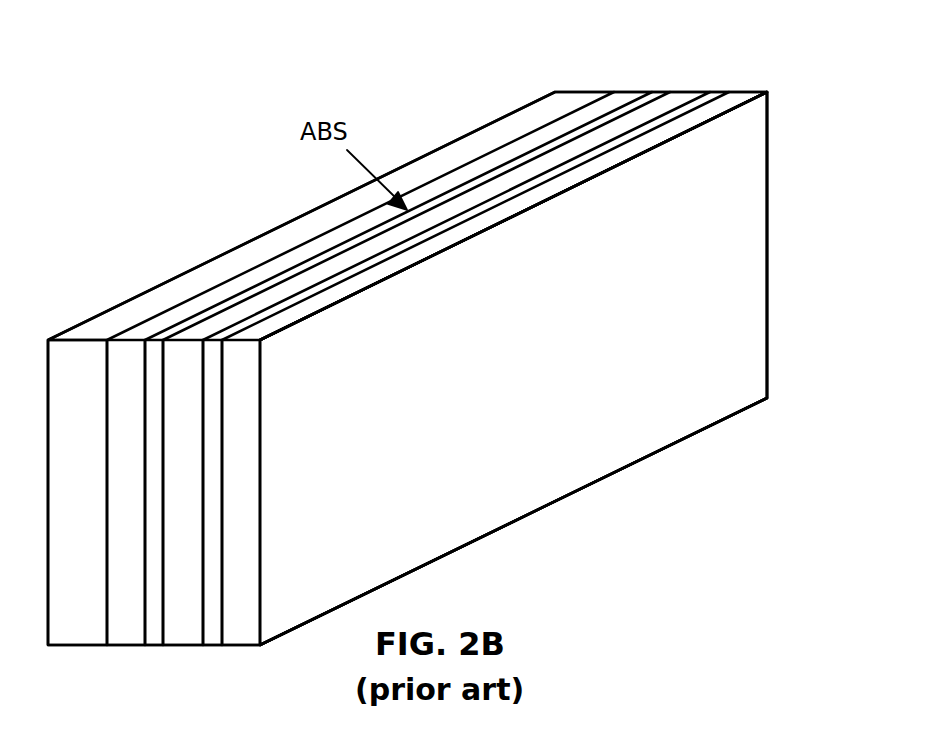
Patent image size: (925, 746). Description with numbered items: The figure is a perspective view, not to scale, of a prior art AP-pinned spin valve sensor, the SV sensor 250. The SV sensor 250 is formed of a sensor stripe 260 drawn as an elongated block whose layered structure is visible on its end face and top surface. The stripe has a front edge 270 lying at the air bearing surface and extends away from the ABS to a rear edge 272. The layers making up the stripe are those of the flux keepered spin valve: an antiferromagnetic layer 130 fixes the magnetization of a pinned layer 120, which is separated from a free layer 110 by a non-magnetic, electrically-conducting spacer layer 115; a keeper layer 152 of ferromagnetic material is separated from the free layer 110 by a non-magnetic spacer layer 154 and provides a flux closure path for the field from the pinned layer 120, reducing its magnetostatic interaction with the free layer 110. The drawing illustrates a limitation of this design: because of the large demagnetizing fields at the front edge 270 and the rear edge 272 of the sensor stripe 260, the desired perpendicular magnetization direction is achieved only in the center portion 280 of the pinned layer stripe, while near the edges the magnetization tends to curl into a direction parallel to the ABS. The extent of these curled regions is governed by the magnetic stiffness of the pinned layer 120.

The antiferromagnetic layer 130 is at (572, 100).
The pinned layer 120 is at (621, 95).
The spacer layer 115 is at (648, 93).
The free layer 110 is at (682, 93).
The non-magnetic spacer layer 154 is at (708, 94).
The keeper layer 152 is at (735, 96).
The sensor stripe 260 is at (767, 190).
The front edge 270 is at (430, 258).
The rear edge 272 is at (547, 506).
The center portion 280 is at (547, 356).
The SV sensor 250 is at (605, 548).